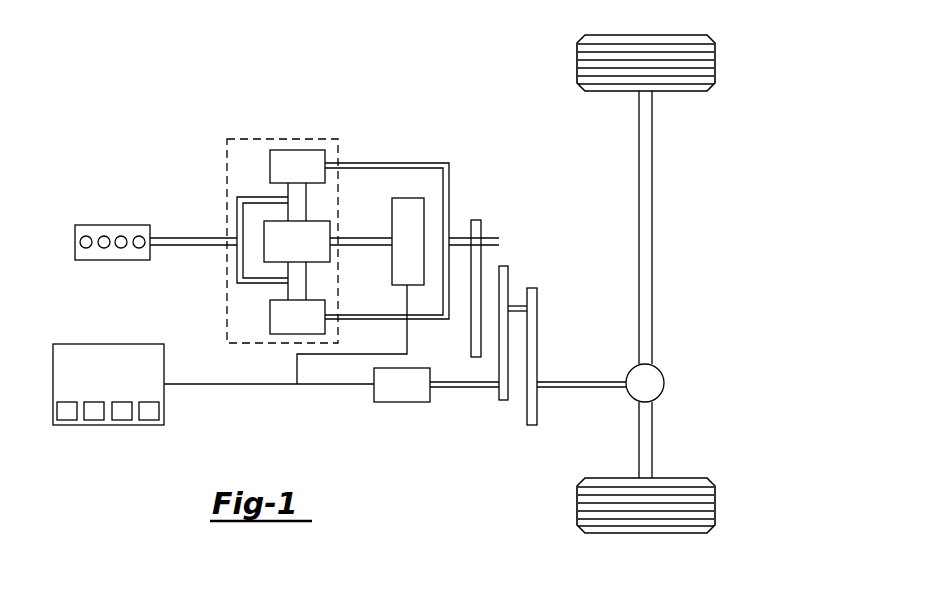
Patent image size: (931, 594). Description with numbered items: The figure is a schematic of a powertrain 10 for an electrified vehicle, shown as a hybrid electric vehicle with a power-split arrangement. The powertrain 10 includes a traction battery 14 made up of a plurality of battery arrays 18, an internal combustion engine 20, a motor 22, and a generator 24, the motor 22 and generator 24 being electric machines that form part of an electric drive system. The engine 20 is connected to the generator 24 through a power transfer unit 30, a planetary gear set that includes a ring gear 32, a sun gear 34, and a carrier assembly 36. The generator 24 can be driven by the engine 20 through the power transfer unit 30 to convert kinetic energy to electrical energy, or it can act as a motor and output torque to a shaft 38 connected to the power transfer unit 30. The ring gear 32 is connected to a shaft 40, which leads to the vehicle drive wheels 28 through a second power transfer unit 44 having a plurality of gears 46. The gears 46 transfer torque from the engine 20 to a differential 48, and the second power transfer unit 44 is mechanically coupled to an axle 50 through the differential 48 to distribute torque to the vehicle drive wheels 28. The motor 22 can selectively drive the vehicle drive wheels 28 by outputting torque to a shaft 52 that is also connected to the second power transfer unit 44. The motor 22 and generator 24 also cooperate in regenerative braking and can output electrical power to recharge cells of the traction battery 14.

The powertrain 10 is at (100, 74).
The traction battery 14 is at (108, 344).
The battery arrays 18 is at (67, 420).
The internal combustion engine 20 is at (78, 226).
The motor 22 is at (405, 402).
The generator 24 is at (424, 206).
The vehicle drive wheels 28 is at (715, 60).
The power transfer unit 30 is at (340, 143).
The ring gear 32 is at (270, 168).
The sun gear 34 is at (320, 262).
The carrier assembly 36 is at (237, 216).
The shaft 38 is at (365, 236).
The shaft 40 is at (462, 248).
The second power transfer unit 44 is at (546, 240).
The gears 46 is at (481, 233).
The differential 48 is at (664, 383).
The axle 50 is at (652, 230).
The shaft 52 is at (468, 389).